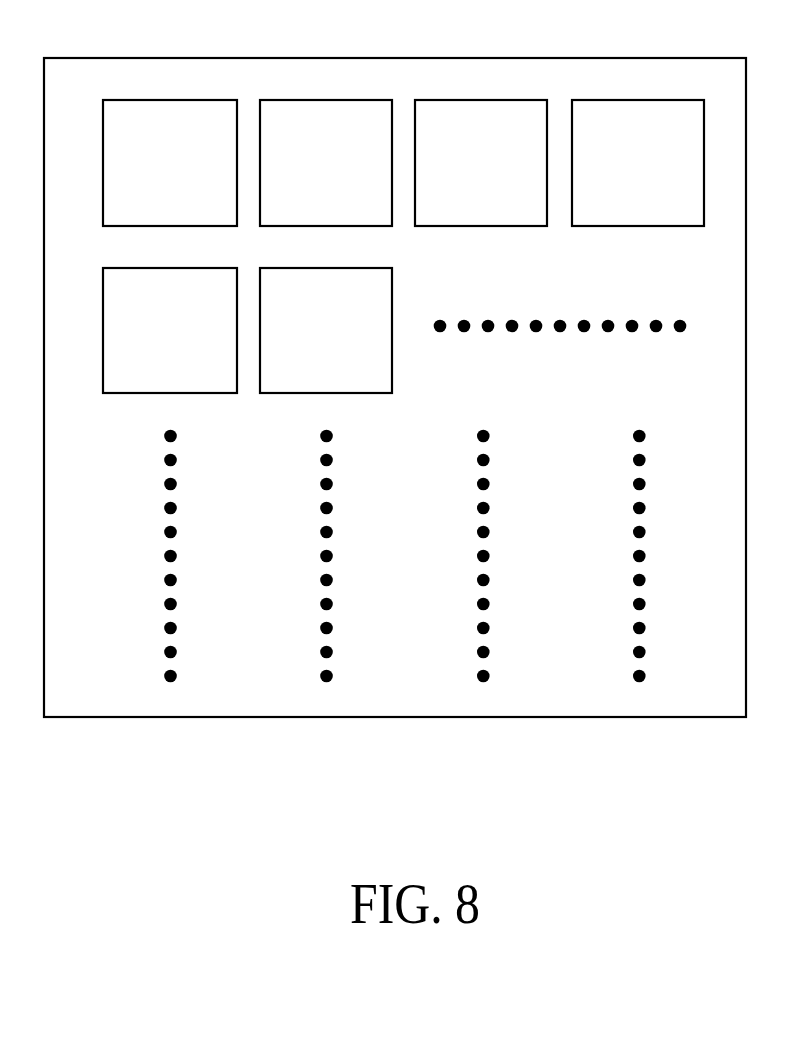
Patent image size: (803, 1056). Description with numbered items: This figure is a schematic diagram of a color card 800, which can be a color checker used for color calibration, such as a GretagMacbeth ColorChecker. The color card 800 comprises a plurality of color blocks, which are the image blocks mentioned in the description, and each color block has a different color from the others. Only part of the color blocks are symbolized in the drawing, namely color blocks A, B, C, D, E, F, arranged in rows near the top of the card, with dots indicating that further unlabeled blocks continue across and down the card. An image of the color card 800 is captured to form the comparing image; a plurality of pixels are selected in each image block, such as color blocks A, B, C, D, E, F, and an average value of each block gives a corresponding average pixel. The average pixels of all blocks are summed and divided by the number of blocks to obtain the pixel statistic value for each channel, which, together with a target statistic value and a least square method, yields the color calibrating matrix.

The color card 800 is at (483, 58).
The color block A is at (170, 163).
The color block B is at (326, 163).
The color block C is at (481, 163).
The color block D is at (638, 163).
The color block E is at (170, 330).
The color block F is at (326, 330).